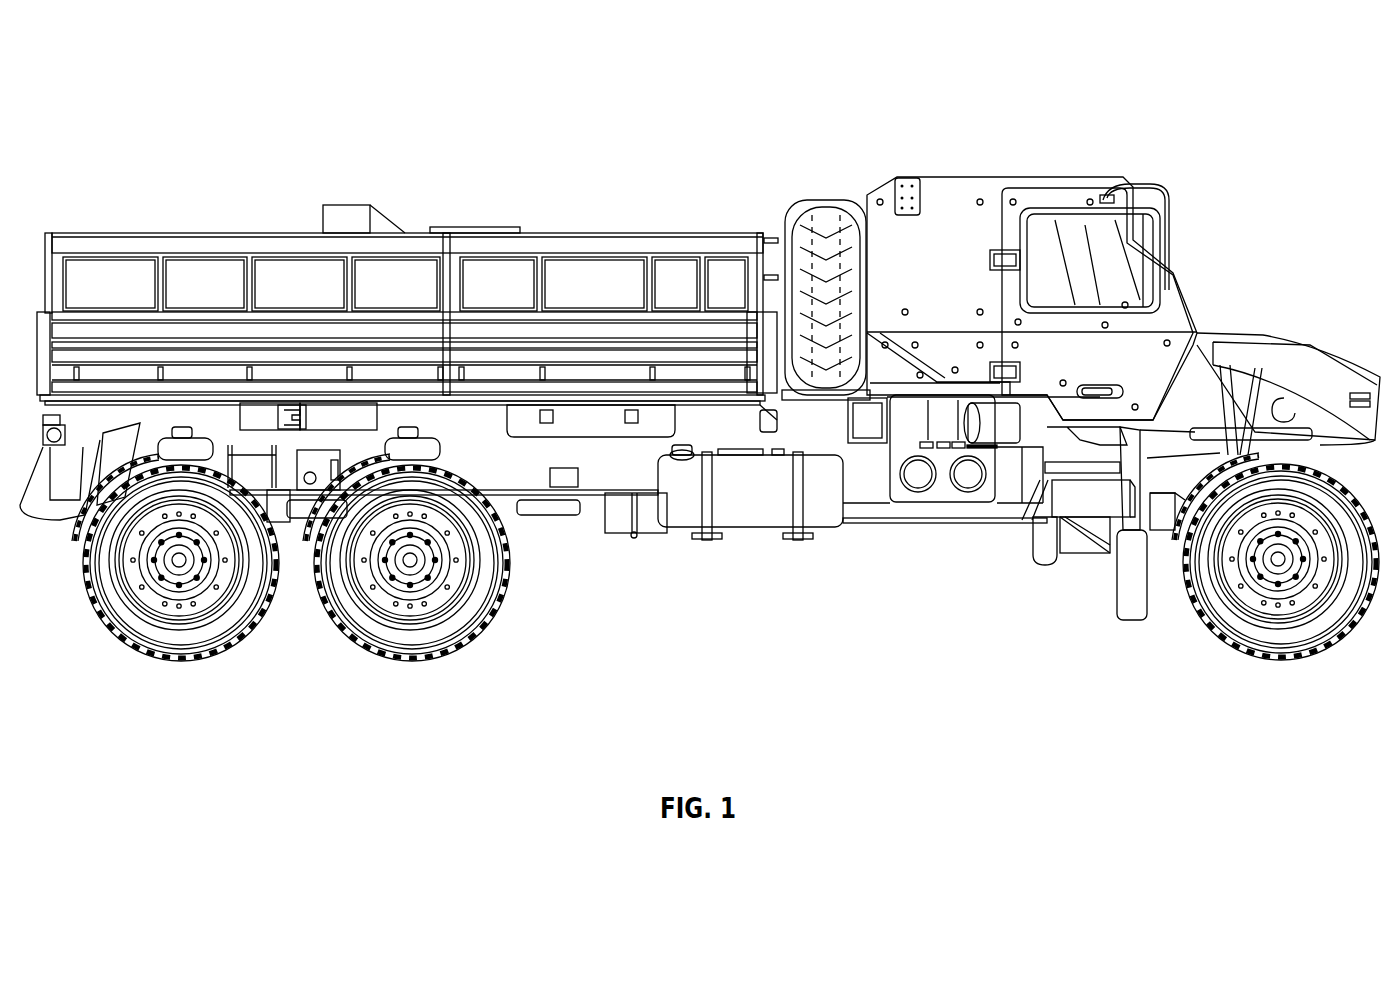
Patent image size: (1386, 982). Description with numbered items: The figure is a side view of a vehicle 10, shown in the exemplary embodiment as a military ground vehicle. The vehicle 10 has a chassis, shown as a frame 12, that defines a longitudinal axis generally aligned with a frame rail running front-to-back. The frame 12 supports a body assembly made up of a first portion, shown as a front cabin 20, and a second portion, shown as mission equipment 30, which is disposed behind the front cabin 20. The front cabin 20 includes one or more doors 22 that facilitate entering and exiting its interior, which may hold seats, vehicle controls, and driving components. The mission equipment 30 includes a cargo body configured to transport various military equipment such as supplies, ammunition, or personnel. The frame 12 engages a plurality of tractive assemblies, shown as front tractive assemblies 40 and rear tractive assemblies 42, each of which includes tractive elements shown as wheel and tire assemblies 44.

The vehicle 10 is at (112, 138).
The frame 12 is at (588, 473).
The front cabin 20 is at (1018, 156).
The doors 22 is at (1127, 347).
The mission equipment 30 is at (497, 206).
The front tractive assemblies 40 is at (1290, 674).
The rear tractive assemblies 42 is at (183, 674).
The wheel and tire assemblies 44 is at (146, 632).